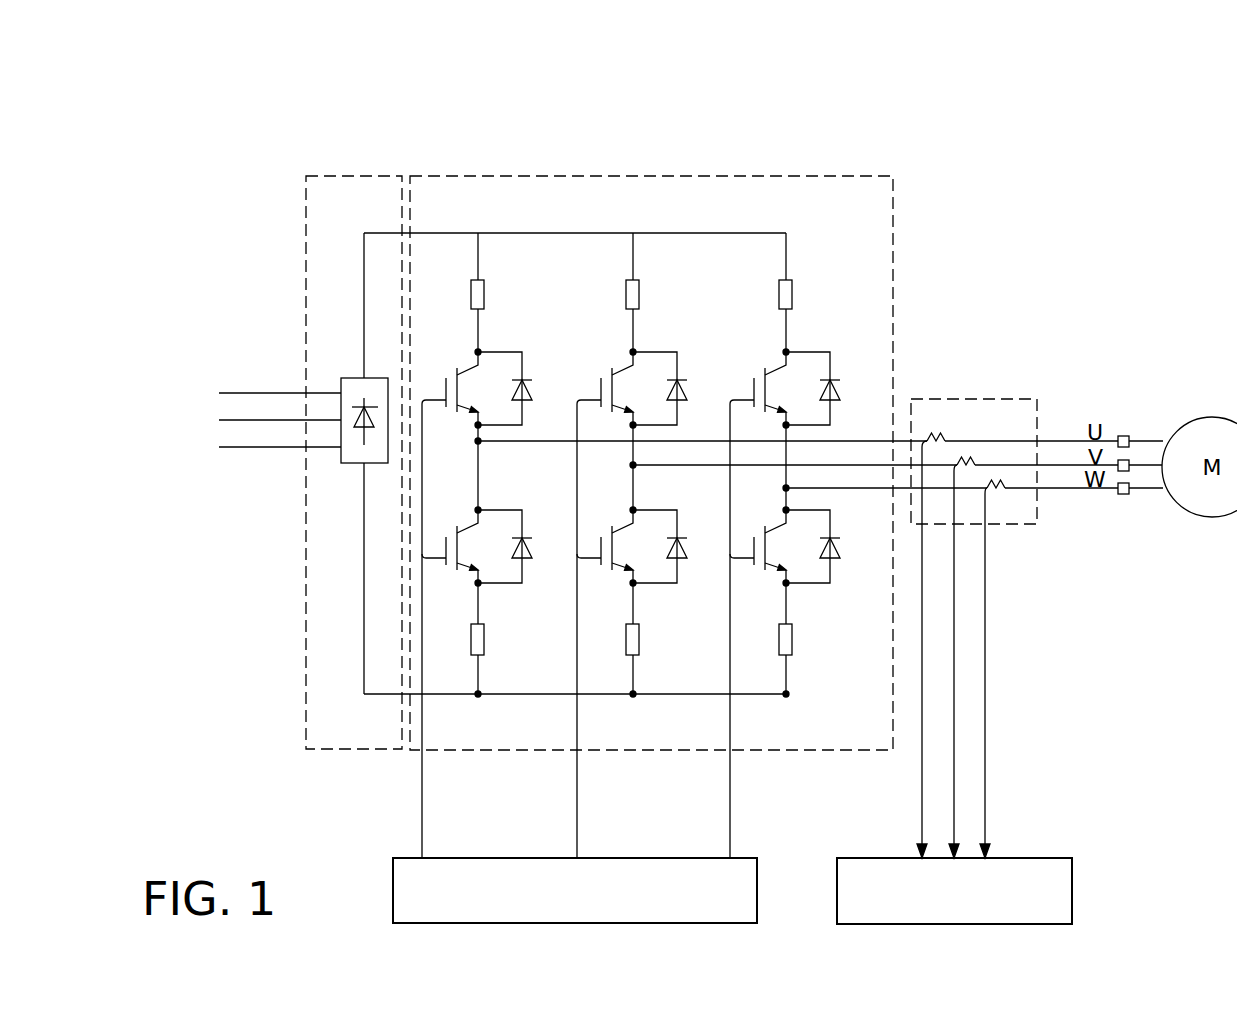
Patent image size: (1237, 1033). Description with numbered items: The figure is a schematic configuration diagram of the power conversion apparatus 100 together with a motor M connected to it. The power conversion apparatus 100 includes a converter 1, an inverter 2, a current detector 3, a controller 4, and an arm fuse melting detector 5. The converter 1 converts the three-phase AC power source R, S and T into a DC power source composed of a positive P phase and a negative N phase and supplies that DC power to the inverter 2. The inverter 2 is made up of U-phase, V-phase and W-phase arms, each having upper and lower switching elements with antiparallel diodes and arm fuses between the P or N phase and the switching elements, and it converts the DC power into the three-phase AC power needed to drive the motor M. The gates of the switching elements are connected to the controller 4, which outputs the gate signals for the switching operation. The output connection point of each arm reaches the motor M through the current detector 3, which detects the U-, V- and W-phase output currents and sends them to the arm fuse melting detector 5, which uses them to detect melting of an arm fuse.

The power conversion apparatus 100 is at (488, 126).
The converter 1 is at (344, 171).
The inverter 2 is at (601, 171).
The current detector 3 is at (984, 391).
The controller 4 is at (386, 890).
The arm fuse melting detector 5 is at (1082, 881).